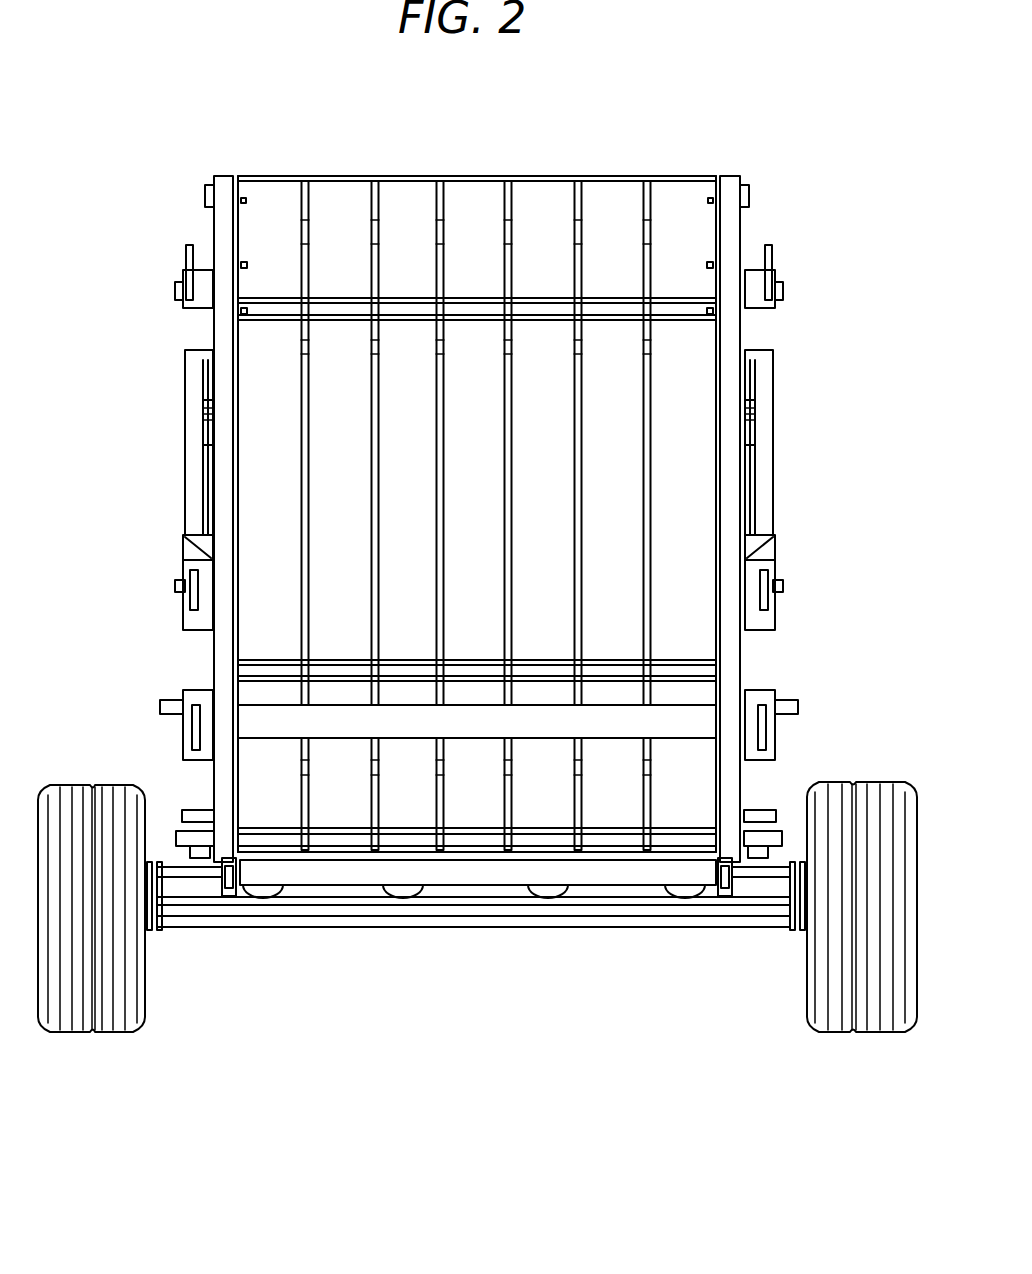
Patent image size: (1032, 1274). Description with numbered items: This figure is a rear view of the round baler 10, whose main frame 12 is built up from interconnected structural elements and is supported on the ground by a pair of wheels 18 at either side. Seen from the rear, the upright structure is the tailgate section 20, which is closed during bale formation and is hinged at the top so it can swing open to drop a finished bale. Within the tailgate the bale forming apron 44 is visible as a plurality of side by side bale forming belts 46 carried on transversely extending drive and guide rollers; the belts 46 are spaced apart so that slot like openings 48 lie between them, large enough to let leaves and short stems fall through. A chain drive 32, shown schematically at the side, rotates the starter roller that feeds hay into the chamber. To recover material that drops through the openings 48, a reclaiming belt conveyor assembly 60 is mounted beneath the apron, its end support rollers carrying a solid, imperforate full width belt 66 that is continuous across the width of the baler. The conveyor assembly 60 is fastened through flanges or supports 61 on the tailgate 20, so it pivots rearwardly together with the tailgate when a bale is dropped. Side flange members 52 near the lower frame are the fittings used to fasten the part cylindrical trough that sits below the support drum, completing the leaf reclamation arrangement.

The baler 10 is at (433, 150).
The main frame 12 is at (192, 930).
The wheels 18 is at (102, 993).
The tailgate section 20 is at (214, 230).
The chain drive 32 is at (188, 657).
The apron 44 is at (548, 808).
The bale forming belts 46 is at (270, 833).
The slot like openings 48 is at (307, 470).
The side flange members 52 is at (232, 897).
The reclaiming belt conveyor assembly 60 is at (418, 884).
The flanges or supports 61 is at (182, 825).
The full width belt 66 is at (467, 868).